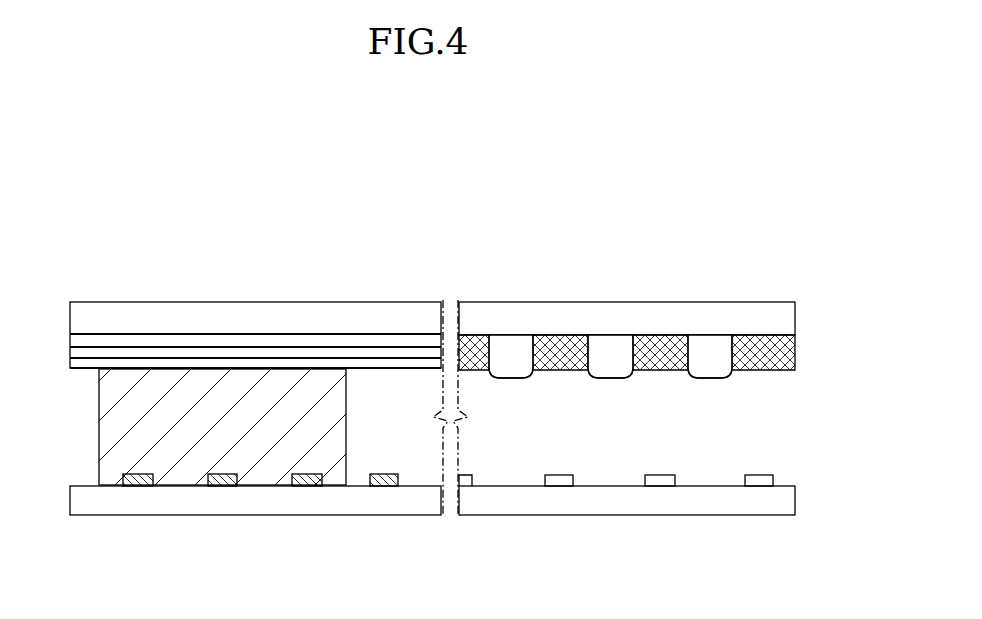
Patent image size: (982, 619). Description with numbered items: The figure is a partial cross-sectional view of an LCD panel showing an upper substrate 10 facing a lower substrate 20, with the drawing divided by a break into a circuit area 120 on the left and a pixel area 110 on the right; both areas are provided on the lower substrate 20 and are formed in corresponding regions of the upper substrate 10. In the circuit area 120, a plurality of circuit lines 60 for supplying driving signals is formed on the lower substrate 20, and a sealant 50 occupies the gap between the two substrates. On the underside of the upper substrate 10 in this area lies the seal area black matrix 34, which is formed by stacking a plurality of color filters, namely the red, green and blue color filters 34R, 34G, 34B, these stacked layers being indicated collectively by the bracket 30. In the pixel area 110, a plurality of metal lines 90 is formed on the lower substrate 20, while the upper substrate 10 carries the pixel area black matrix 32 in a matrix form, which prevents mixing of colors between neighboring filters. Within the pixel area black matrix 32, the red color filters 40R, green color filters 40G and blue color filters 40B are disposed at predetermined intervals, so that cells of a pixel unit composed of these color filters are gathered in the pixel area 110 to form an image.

The upper substrate 10 is at (140, 313).
The lower substrate 20 is at (240, 500).
The color filter layer 30 is at (495, 208).
The pixel area black matrix 32 is at (467, 345).
The seal area black matrix 34 is at (235, 247).
The blue color filter 34B is at (262, 340).
The green color filter 34G is at (320, 352).
The red color filter 34R is at (376, 365).
The red color filter 40R is at (520, 345).
The green color filter 40G is at (614, 345).
The blue color filter 40B is at (704, 345).
The sealant 50 is at (177, 462).
The circuit lines 60 is at (313, 487).
The metal lines 90 is at (558, 480).
The pixel area 110 is at (607, 178).
The circuit area 120 is at (267, 178).